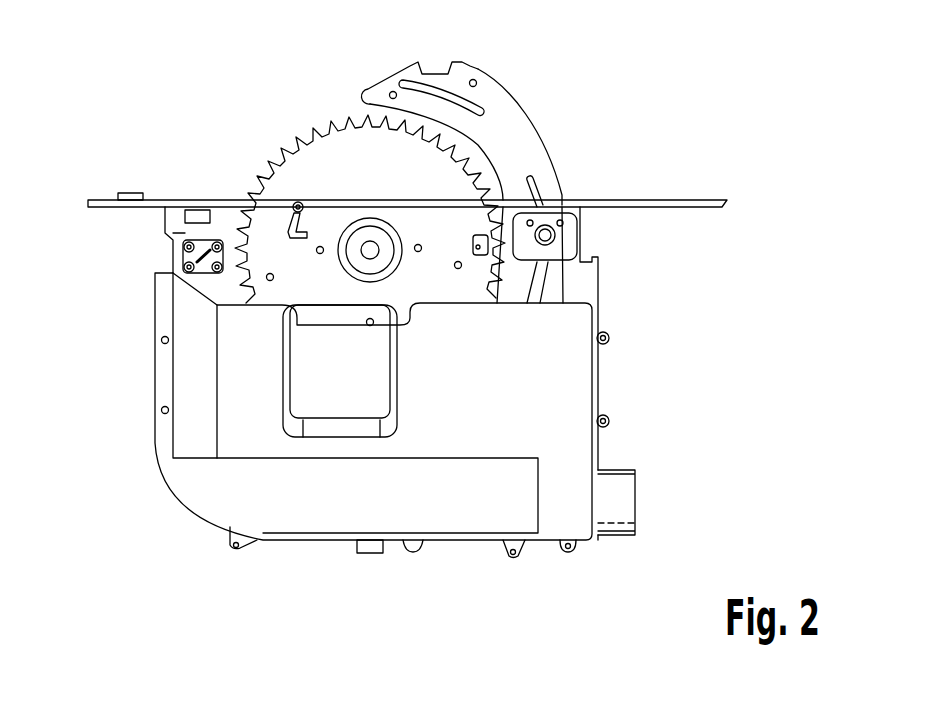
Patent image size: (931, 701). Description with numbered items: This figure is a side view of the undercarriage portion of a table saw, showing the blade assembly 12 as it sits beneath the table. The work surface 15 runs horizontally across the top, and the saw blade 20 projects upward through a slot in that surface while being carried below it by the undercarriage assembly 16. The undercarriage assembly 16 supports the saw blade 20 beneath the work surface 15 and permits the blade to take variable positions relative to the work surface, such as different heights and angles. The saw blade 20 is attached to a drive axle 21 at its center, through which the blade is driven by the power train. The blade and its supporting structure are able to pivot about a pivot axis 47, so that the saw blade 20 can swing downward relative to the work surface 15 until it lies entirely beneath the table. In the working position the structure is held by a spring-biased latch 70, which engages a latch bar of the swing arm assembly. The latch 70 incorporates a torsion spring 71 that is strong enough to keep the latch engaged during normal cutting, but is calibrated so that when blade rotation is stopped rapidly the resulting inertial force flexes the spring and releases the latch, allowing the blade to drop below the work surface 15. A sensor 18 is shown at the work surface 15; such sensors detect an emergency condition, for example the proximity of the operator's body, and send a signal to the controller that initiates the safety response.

The blade assembly 12 is at (236, 128).
The work surface 15 is at (676, 203).
The undercarriage assembly 16 is at (612, 374).
The sensors 18 is at (124, 193).
The saw blade 20 is at (336, 158).
The drive axle 21 is at (360, 237).
The pivot axis 47 is at (482, 243).
The spring-biased latch 70 is at (265, 206).
The torsion spring 71 is at (283, 238).